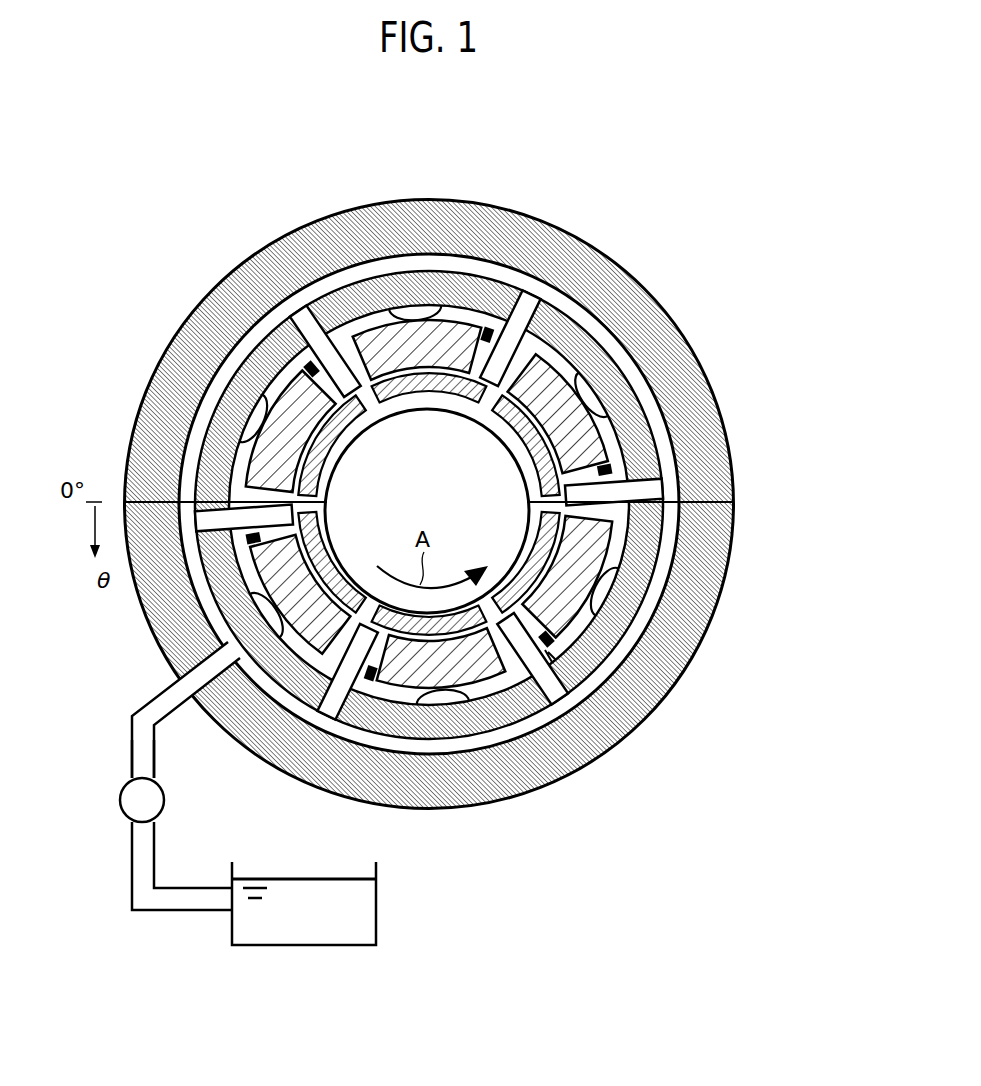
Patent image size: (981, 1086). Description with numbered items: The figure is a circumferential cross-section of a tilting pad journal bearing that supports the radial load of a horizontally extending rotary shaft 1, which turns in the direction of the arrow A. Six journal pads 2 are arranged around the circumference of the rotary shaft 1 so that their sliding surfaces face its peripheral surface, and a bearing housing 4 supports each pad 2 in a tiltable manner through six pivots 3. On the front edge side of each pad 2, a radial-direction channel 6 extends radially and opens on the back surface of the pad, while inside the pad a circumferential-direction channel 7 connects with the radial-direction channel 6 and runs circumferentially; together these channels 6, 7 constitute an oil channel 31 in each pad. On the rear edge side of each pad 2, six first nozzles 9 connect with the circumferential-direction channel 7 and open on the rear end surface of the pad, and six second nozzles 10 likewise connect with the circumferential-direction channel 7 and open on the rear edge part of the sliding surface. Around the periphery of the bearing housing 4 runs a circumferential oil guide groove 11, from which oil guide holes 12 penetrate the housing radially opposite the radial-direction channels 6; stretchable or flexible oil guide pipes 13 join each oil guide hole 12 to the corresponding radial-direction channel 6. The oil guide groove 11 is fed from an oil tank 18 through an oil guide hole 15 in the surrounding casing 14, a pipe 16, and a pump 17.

The rotary shaft 1 is at (436, 510).
The journal pad 2 is at (382, 322).
The pivot 3 is at (412, 307).
The bearing housing 4 is at (457, 282).
The radial-direction channel 6 is at (575, 658).
The circumferential-direction channel 7 is at (612, 620).
The first nozzle 9 is at (548, 537).
The second nozzle 10 is at (537, 593).
The oil guide groove 11 is at (477, 743).
The oil guide hole 12 is at (568, 677).
The oil guide pipe 13 is at (550, 668).
The casing 14 is at (553, 240).
The oil guide hole of casing 15 is at (197, 673).
The pipe 16 is at (177, 710).
The pump 17 is at (165, 800).
The oil tank 18 is at (377, 915).
The oil channel 31 is at (531, 530).